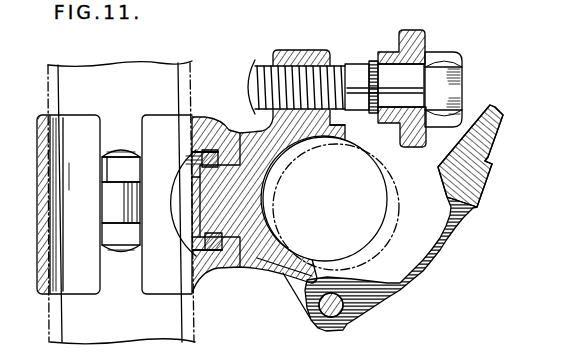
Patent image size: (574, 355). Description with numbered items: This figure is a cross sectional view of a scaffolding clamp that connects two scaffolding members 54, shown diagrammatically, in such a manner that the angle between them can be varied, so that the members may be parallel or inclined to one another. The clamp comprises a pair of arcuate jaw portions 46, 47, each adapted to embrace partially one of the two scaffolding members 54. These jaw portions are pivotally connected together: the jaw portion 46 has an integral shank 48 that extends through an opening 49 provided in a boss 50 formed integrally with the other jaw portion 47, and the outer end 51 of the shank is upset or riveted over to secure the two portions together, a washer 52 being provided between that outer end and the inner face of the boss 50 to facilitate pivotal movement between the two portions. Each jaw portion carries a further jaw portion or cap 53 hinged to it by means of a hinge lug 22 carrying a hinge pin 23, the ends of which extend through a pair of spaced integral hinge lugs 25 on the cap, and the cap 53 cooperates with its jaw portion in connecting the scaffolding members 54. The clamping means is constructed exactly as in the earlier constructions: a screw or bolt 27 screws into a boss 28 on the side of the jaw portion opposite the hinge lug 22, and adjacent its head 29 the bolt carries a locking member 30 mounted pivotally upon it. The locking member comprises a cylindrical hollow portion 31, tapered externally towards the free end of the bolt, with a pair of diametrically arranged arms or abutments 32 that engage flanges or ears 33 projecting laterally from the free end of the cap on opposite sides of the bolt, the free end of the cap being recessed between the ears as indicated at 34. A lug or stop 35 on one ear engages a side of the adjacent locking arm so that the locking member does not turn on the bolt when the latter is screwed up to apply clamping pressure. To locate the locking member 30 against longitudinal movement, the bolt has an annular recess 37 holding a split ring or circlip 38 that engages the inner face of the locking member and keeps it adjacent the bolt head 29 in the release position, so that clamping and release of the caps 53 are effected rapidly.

The hinge lug 22 is at (122, 235).
The hinge pin 23 is at (114, 147).
The spaced integral hinge lugs 25 is at (118, 200).
The screw or bolt 27 is at (354, 70).
The boss 28 is at (300, 52).
The head 29 is at (447, 58).
The locking member 30 is at (386, 115).
The cylindrical hollow portion 31 is at (427, 43).
The arms or abutments 32 is at (421, 134).
The flanges or ears 33 is at (490, 117).
The recess 34 is at (463, 192).
The lug or stop 35 is at (490, 159).
The annular recess 37 is at (381, 78).
The split ring or circlip 38 is at (374, 60).
The arcuate jaw portion 46 is at (262, 193).
The arcuate jaw portion 47 is at (191, 268).
The shank 48 is at (222, 208).
The opening 49 is at (230, 137).
The boss 50 is at (237, 262).
The outer end of the shank 51 is at (190, 165).
The washer 52 is at (191, 137).
The jaw portion or cap 53 is at (62, 268).
The scaffolding members 54 is at (63, 78).